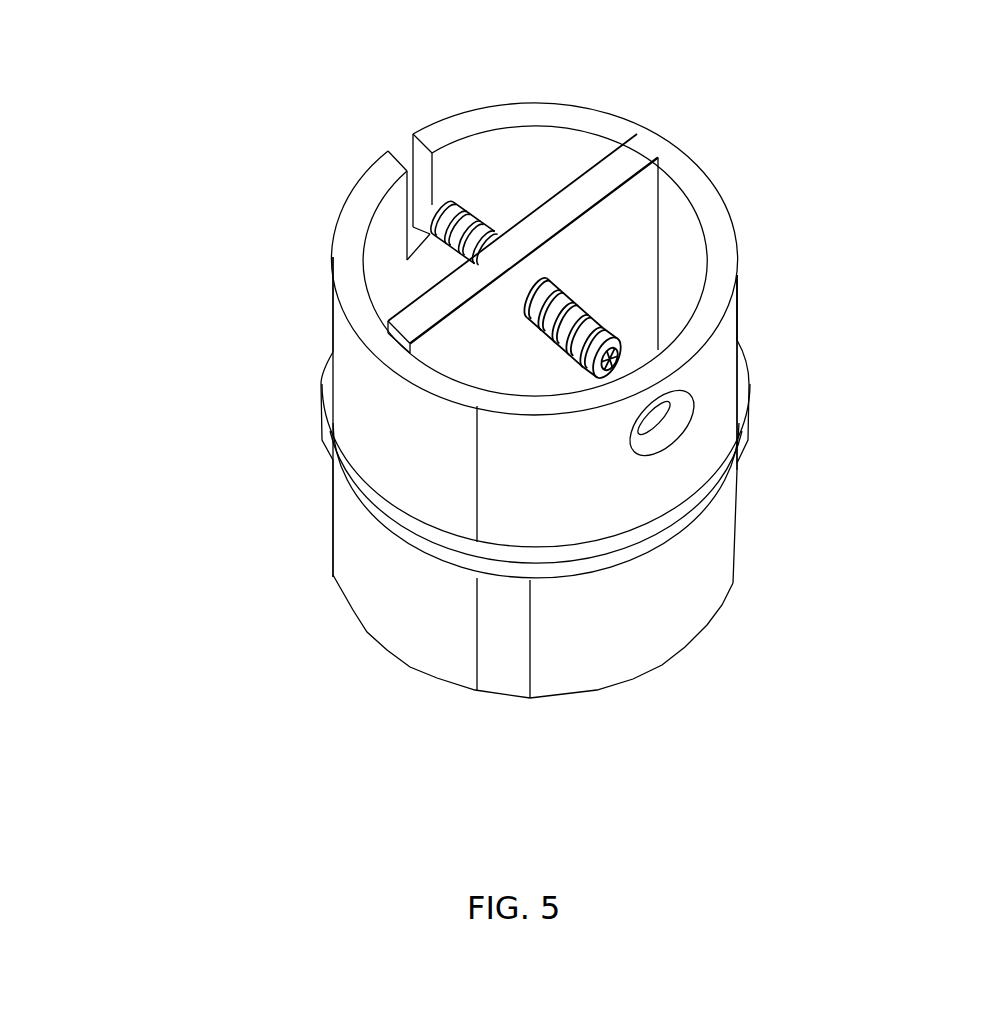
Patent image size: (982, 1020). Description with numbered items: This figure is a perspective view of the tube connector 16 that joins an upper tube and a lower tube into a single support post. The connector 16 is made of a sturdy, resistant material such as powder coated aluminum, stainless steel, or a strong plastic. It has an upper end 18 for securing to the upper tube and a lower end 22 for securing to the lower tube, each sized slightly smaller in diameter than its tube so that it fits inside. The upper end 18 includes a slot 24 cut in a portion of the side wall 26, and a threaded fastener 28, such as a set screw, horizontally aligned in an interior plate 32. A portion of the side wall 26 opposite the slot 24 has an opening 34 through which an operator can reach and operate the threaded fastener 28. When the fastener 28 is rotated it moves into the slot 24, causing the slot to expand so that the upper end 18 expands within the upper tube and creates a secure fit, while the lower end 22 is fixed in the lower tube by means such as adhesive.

The tube connector 16 is at (642, 622).
The upper end 18 is at (357, 401).
The lower end 22 is at (417, 620).
The slot 24 is at (390, 142).
The side wall 26 is at (705, 378).
The threaded fastener 28 is at (590, 322).
The interior plate 32 is at (612, 173).
The opening 34 is at (667, 425).